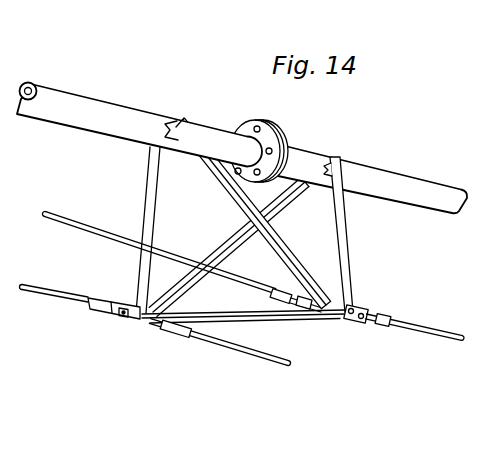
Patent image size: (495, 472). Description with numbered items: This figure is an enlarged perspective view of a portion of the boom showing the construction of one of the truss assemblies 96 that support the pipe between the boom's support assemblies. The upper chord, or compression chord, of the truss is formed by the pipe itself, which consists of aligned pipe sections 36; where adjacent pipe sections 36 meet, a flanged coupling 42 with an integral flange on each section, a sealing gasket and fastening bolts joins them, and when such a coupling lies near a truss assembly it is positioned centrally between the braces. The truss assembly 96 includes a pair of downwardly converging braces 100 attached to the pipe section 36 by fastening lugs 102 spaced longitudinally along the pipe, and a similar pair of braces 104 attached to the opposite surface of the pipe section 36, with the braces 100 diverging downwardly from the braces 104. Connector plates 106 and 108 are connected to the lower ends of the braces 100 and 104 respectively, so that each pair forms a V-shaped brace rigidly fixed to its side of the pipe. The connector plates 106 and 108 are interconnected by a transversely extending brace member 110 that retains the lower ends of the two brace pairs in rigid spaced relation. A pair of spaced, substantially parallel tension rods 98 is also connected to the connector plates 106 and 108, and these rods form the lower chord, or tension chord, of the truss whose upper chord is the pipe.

The pipe section 36 is at (431, 187).
The flanged coupling 42 is at (259, 113).
The truss assembly 96 is at (257, 217).
The tension rod 98 is at (430, 328).
The brace 100 is at (342, 223).
The fastening lug 102 is at (167, 120).
The brace 104 is at (153, 190).
The connector plate 106 is at (376, 331).
The connector plate 108 is at (128, 322).
The brace member 110 is at (267, 322).